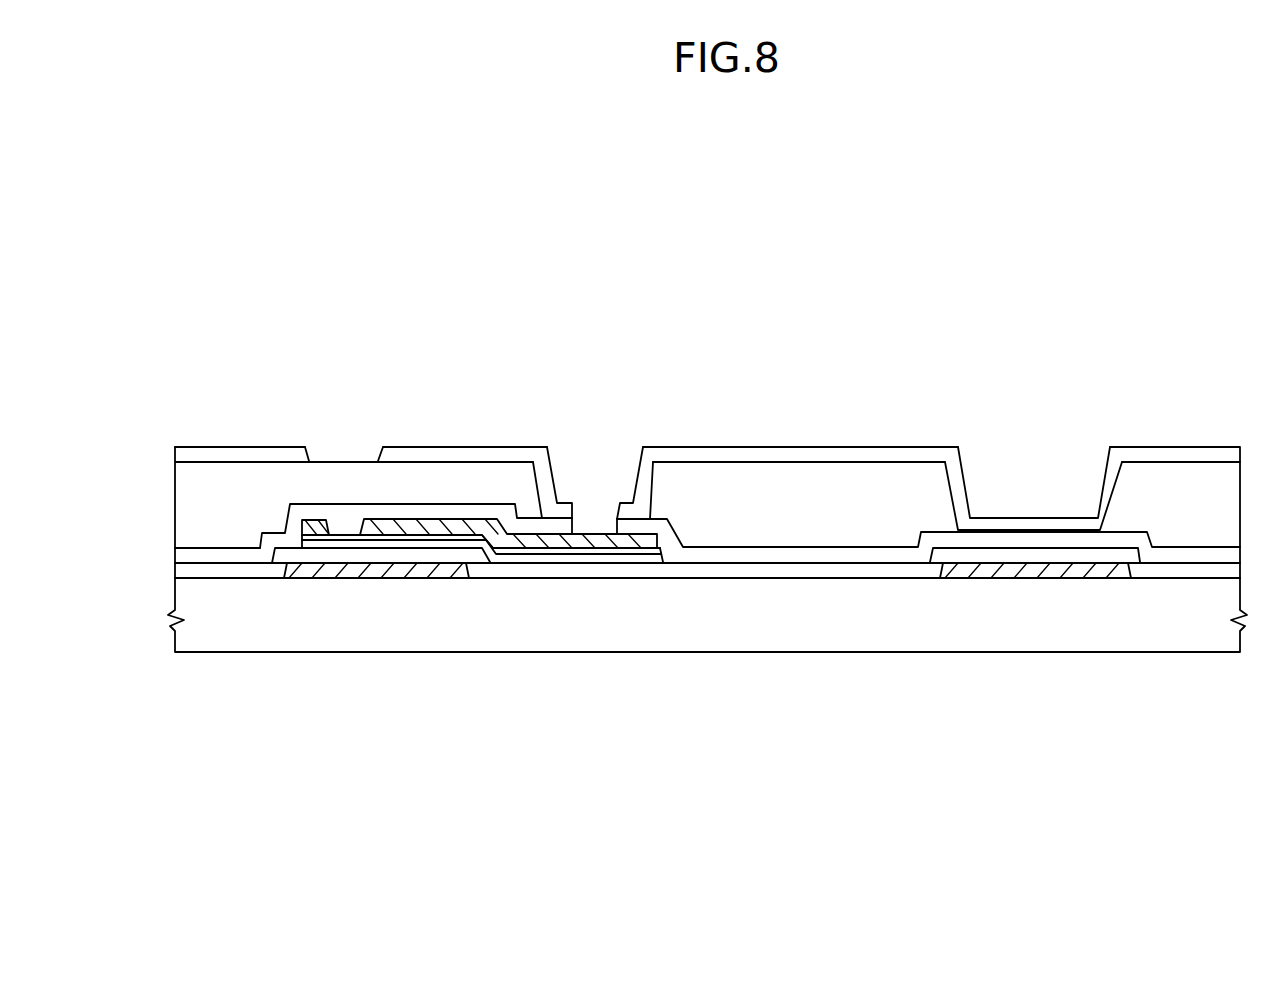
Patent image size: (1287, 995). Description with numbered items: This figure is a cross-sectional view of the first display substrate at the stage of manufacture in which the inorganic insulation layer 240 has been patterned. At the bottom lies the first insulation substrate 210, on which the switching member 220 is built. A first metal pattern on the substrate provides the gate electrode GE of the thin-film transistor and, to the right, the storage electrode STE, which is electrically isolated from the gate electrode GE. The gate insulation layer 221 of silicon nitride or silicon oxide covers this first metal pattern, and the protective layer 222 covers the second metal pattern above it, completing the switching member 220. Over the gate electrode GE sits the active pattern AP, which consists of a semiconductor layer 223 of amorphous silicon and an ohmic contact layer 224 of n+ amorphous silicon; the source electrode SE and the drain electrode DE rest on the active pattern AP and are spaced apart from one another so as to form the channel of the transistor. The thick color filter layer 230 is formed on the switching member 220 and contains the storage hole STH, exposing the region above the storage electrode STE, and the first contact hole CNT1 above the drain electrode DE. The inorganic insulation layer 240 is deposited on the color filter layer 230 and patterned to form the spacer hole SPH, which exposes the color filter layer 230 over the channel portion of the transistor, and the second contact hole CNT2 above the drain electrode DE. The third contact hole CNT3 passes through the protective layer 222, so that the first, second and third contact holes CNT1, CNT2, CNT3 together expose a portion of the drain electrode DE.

The first insulation substrate 210 is at (1127, 622).
The switching member 220 is at (680, 634).
The gate insulation layer 221 is at (215, 572).
The protective layer 222 is at (253, 558).
The semiconductor layer 223 is at (555, 558).
The ohmic contact layer 224 is at (612, 556).
The color filter layer 230 is at (875, 518).
The inorganic insulation layer 240 is at (800, 455).
The source electrode SE is at (312, 527).
The gate electrode GE is at (393, 567).
The drain electrode DE is at (447, 534).
The active pattern AP is at (482, 647).
The spacer hole SPH is at (308, 457).
The storage hole STH is at (950, 483).
The storage electrode STE is at (1015, 570).
The first contact hole CNT1 is at (542, 477).
The second contact hole CNT2 is at (574, 512).
The third contact hole CNT3 is at (577, 528).